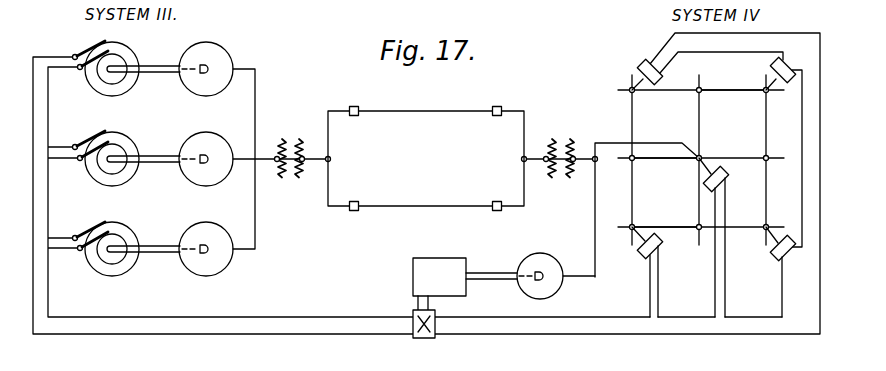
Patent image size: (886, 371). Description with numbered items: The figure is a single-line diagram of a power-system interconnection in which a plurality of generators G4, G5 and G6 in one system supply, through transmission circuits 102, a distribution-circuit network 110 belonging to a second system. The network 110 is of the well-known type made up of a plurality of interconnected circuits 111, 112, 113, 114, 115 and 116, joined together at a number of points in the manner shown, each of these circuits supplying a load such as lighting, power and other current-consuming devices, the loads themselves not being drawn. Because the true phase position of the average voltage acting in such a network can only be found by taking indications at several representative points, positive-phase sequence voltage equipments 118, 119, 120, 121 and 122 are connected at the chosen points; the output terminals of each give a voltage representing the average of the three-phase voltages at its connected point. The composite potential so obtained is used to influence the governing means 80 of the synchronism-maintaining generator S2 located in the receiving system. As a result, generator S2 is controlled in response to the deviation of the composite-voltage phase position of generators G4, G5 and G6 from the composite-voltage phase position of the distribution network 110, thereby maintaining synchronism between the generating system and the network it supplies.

The generator G4 is at (228, 51).
The generator G5 is at (236, 132).
The generator G6 is at (233, 218).
The transmission circuits 102 is at (440, 168).
The synchronism-maintaining generator S2 is at (569, 252).
The governing means 80 is at (435, 338).
The distribution-circuit network 110 is at (699, 266).
The interconnected circuit 111 is at (699, 191).
The interconnected circuit 112 is at (766, 142).
The interconnected circuit 113 is at (634, 118).
The interconnected circuit 114 is at (734, 92).
The interconnected circuit 115 is at (676, 163).
The interconnected circuit 116 is at (676, 226).
The positive-phase sequence voltage equipment 118 is at (724, 168).
The positive-phase sequence voltage equipment 119 is at (644, 65).
The positive-phase sequence voltage equipment 120 is at (784, 70).
The positive-phase sequence voltage equipment 121 is at (786, 235).
The positive-phase sequence voltage equipment 122 is at (644, 254).